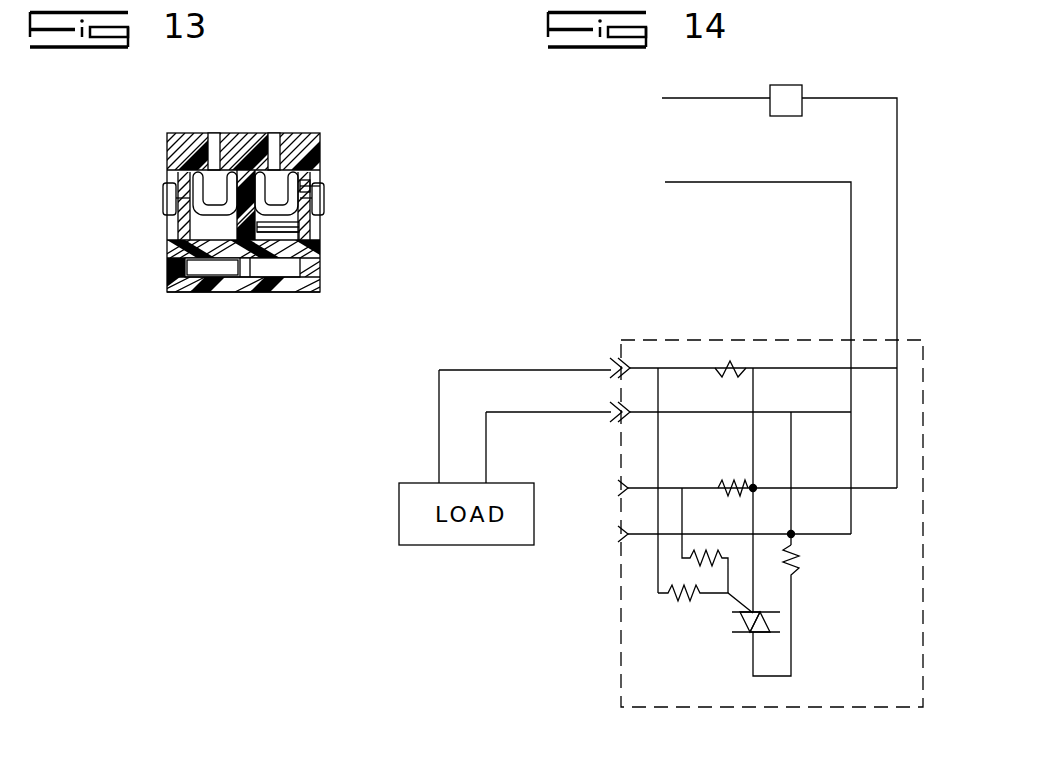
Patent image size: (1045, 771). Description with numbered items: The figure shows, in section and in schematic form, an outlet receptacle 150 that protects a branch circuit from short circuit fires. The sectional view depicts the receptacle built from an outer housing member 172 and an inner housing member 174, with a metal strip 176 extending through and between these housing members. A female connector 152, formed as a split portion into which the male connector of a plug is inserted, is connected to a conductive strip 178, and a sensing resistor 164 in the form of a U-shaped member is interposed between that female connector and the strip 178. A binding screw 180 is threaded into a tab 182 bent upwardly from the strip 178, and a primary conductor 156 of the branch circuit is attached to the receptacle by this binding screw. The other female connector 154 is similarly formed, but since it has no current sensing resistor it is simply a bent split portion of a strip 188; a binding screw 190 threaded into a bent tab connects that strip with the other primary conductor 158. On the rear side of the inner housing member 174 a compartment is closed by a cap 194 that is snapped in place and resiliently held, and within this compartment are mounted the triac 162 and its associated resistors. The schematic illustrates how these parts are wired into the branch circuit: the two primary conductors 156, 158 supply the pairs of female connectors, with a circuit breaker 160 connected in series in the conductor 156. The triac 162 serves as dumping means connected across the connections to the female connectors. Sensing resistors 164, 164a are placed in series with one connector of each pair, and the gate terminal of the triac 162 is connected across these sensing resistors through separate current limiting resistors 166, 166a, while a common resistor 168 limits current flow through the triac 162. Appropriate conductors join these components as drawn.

In FIG. 13, the outlet receptacle 150 is at (150, 120).
In FIG. 14, the outlet receptacle 150 is at (598, 620).
In FIG. 13, the female connector 152 is at (285, 190).
In FIG. 14, the female connector 152 is at (628, 365).
In FIG. 13, the female connector 154 is at (212, 195).
In FIG. 14, the female connector 154 is at (628, 410).
In FIG. 14, the primary conductor 156 is at (722, 98).
In FIG. 14, the primary conductor 158 is at (782, 182).
In FIG. 14, the circuit breaker 160 is at (803, 87).
In FIG. 14, the triac 162 is at (742, 633).
In FIG. 13, the sensing resistor 164 is at (300, 220).
In FIG. 14, the sensing resistor 164 is at (735, 365).
In FIG. 14, the sensing resistor 164a is at (728, 482).
In FIG. 13, the current limiting resistor 166 is at (266, 273).
In FIG. 14, the current limiting resistor 166 is at (683, 596).
In FIG. 13, the current limiting resistor 166a is at (213, 273).
In FIG. 14, the current limiting resistor 166a is at (697, 555).
In FIG. 14, the common resistor 168 is at (795, 575).
In FIG. 13, the outer housing member 172 is at (166, 143).
In FIG. 13, the inner housing member 174 is at (166, 248).
In FIG. 13, the metal strip 176 is at (281, 205).
In FIG. 13, the conductive strip 178 is at (300, 238).
In FIG. 13, the binding screw 180 is at (322, 195).
In FIG. 13, the tab 182 is at (315, 178).
In FIG. 13, the strip 188 is at (178, 222).
In FIG. 13, the binding screw 190 is at (163, 190).
In FIG. 13, the cap 194 is at (322, 287).